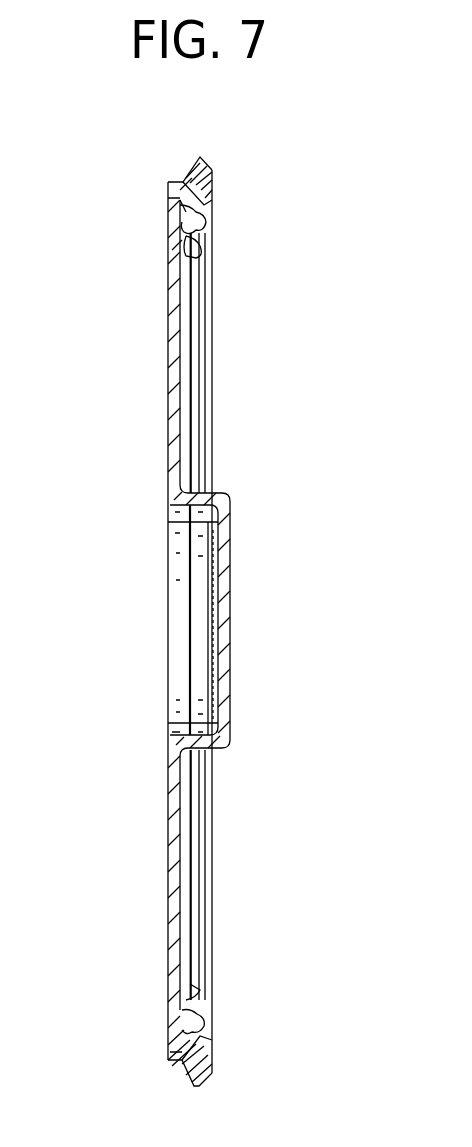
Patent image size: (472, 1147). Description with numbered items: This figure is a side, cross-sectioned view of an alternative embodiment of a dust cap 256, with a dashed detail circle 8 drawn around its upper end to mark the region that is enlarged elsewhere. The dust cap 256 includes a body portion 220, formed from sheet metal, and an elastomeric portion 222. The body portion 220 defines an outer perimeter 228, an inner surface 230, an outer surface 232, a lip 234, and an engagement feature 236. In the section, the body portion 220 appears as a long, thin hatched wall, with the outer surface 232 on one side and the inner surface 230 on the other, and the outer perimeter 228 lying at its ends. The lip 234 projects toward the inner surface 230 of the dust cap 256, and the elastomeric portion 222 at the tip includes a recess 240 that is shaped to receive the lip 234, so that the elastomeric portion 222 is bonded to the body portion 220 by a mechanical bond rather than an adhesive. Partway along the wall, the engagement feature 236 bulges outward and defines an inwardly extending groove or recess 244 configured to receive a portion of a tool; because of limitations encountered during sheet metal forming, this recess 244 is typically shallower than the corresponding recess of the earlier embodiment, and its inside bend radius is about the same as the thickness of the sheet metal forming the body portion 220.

The detail view circle 8 is at (214, 118).
The body portion 220 is at (172, 332).
The elastomeric portion 222 is at (196, 162).
The outer perimeter 228 is at (205, 253).
The inner surface 230 is at (182, 398).
The outer surface 232 is at (170, 410).
The lip 234 is at (206, 210).
The engagement feature 236 is at (190, 518).
The recess 240 is at (172, 245).
The inwardly extending groove or recess 244 is at (218, 578).
The dust cap 256 is at (283, 513).